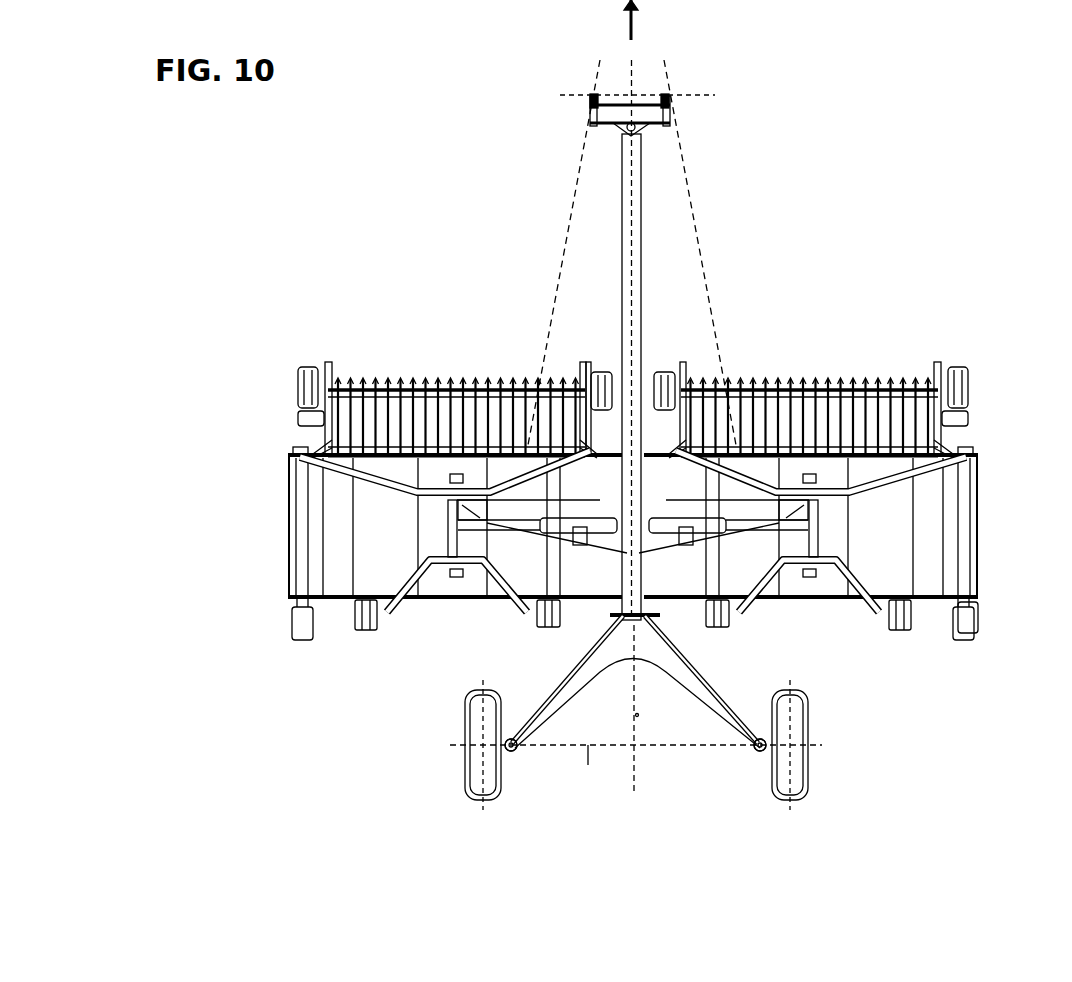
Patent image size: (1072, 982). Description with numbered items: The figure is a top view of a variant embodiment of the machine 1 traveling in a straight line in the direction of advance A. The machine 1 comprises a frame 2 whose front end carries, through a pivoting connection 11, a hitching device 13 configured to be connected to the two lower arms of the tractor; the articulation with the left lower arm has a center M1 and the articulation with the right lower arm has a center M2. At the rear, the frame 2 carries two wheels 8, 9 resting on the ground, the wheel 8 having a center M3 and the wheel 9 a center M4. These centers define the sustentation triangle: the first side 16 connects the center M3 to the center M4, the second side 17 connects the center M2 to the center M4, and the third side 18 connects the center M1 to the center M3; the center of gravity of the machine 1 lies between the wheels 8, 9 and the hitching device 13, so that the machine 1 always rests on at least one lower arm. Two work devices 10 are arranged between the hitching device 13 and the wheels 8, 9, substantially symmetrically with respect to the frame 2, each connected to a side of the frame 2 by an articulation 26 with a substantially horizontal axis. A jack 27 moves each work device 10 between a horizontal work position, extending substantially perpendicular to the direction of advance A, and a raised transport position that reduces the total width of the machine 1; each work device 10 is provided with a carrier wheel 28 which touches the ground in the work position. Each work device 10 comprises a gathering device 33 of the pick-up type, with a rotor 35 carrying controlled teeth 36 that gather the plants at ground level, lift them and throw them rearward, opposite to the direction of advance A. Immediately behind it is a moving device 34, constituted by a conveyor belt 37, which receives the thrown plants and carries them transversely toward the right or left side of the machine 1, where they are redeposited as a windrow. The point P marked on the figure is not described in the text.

The machine 1 is at (982, 634).
The frame 2 is at (645, 232).
The wheel 8 is at (481, 773).
The wheel 9 is at (806, 773).
The work device 10 is at (291, 448).
The pivoting connection 11 is at (626, 131).
The hitching device 13 is at (675, 118).
The first side 16 is at (636, 767).
The second side 17 is at (702, 265).
The third side 18 is at (575, 212).
The articulation 26 is at (598, 378).
The jack 27 is at (566, 548).
The carrier wheel 28 is at (298, 378).
The gathering device 33 is at (433, 374).
The moving device 34 is at (287, 553).
The rotor 35 is at (378, 380).
The controlled teeth 36 is at (479, 385).
The conveyor belt 37 is at (316, 521).
The direction of advance A is at (642, 20).
The center M1 is at (596, 100).
The center M2 is at (664, 100).
The center M3 is at (472, 740).
The center M4 is at (806, 740).
The pivot point P is at (637, 715).